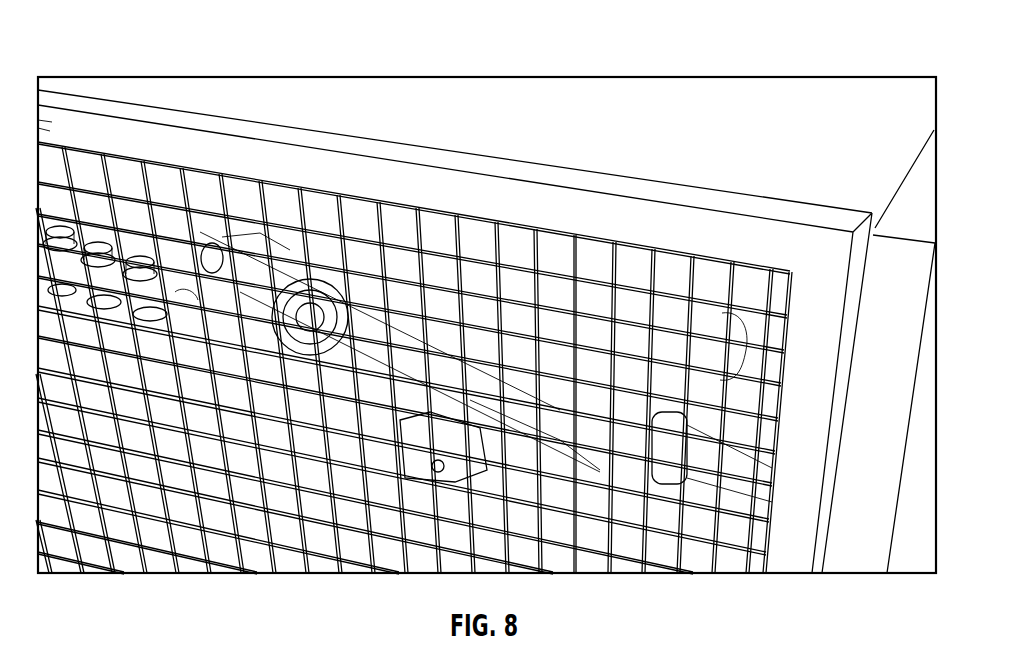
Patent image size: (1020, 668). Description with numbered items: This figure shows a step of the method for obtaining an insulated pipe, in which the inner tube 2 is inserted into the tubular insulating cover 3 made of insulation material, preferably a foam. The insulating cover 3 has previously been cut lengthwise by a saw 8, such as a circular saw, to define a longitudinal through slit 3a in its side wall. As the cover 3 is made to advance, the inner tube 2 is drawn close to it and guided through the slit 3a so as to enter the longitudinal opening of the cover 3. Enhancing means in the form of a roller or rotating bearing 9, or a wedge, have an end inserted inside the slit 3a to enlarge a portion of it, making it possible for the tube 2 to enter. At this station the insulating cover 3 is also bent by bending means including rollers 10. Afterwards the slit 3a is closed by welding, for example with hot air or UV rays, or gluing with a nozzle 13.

The inner tube 2 is at (340, 440).
The tubular insulating cover 3 is at (556, 548).
The longitudinal through slit 3a is at (185, 298).
The saw 8 is at (410, 455).
The roller or rotating bearing 9 is at (222, 237).
The rollers 10 is at (335, 455).
The nozzle 13 is at (152, 200).